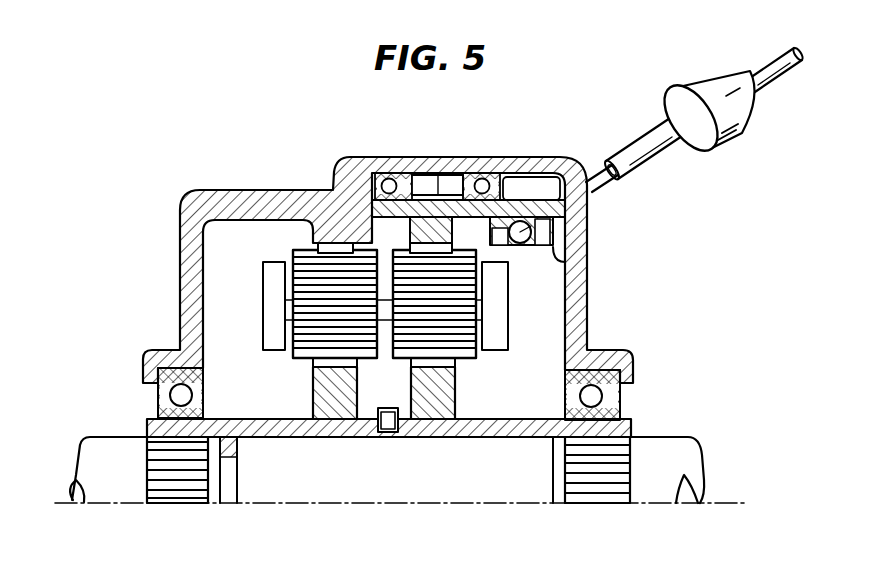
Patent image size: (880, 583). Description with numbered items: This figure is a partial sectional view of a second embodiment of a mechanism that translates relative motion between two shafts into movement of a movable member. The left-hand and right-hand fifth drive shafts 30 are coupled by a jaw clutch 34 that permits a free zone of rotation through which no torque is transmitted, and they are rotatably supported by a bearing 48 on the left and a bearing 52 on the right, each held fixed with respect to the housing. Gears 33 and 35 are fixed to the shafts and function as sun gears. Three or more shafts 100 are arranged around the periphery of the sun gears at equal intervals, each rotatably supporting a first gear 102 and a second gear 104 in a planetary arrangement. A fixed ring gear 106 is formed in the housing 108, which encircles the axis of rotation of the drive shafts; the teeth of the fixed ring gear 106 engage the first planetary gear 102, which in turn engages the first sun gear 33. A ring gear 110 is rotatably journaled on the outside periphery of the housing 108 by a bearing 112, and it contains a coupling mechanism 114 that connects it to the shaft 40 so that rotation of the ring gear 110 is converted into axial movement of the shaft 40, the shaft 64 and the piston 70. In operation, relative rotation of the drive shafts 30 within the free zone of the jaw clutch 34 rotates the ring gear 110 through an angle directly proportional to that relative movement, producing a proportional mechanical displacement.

The fifth drive shaft 30 is at (90, 458).
The gear 33 is at (313, 402).
The jaw clutch 34 is at (404, 492).
The gear 35 is at (455, 403).
The shaft 40 is at (612, 188).
The bearing 48 is at (172, 372).
The bearing 52 is at (620, 406).
The shaft 64 is at (646, 137).
The piston 70 is at (726, 86).
The shaft 100 is at (383, 325).
The first gear 102 is at (302, 313).
The second gear 104 is at (458, 318).
The fixed ring gear 106 is at (322, 240).
The housing 108 is at (362, 183).
The ring gear 110 is at (441, 205).
The bearing 112 is at (504, 190).
The coupling mechanism 114 is at (555, 258).